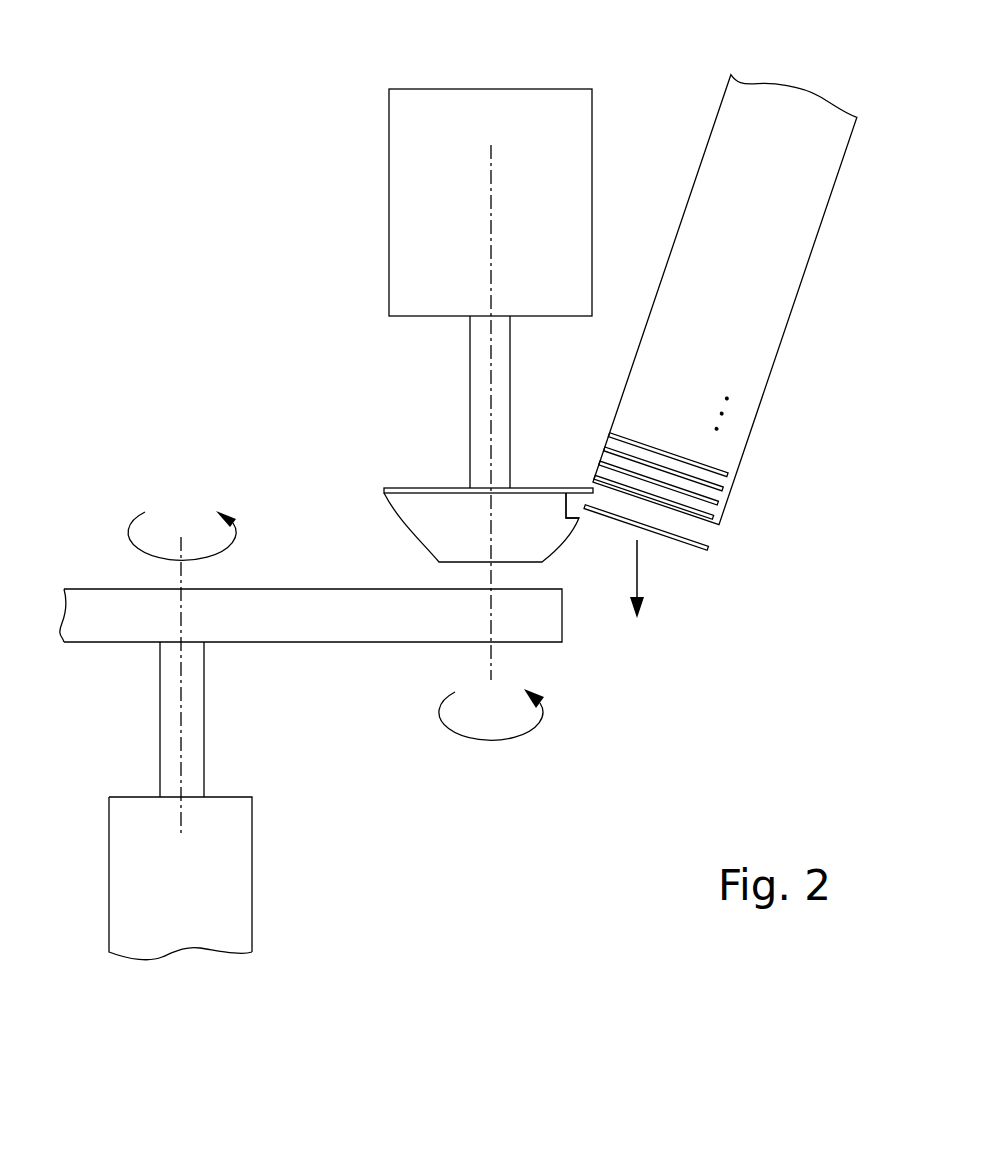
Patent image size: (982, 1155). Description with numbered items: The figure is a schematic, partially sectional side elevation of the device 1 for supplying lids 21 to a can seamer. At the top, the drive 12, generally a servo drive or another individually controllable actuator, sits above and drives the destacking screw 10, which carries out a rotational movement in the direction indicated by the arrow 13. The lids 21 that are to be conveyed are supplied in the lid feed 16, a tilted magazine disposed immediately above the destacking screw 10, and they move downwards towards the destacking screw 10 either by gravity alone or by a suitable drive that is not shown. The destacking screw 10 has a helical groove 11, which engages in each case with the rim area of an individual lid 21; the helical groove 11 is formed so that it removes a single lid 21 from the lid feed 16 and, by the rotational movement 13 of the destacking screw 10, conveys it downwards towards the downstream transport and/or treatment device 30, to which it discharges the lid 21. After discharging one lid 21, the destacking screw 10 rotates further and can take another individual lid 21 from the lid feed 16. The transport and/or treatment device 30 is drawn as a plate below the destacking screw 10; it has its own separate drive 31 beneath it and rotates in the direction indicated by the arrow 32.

The device 1 is at (170, 97).
The destacking screw 10 is at (412, 488).
The helical groove 11 is at (577, 511).
The drive 12 is at (535, 117).
The rotational movement 13 is at (520, 740).
The lid feed 16 is at (757, 338).
The lids 21 is at (720, 467).
The transport and/or treatment device 30 is at (355, 625).
The drive 31 is at (240, 852).
The direction of rotation 32 is at (223, 552).